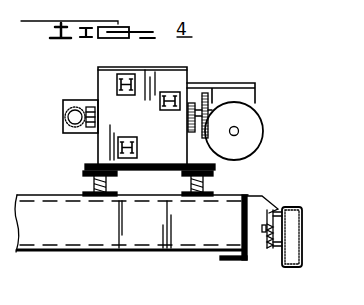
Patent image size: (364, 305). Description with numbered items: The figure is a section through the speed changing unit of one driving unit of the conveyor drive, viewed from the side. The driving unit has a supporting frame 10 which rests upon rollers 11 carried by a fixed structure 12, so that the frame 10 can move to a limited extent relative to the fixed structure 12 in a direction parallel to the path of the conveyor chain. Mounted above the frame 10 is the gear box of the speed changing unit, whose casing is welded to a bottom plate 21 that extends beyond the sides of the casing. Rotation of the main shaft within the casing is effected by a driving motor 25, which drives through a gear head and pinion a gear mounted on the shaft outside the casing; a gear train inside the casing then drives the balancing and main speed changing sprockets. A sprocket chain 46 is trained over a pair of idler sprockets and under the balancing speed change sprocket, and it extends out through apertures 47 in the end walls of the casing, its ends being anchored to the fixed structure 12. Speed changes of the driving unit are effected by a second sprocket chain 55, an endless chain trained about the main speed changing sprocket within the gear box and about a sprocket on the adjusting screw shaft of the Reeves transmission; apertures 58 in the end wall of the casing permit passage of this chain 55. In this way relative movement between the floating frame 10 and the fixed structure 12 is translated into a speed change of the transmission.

The supporting frame 10 is at (235, 260).
The rollers 11 is at (270, 249).
The fixed structure 12 is at (297, 252).
The bottom plate 21 is at (88, 167).
The driving motor 25 is at (246, 147).
The sprocket chain 46 is at (166, 110).
The apertures 47 is at (187, 72).
The second sprocket chain 55 is at (118, 148).
The apertures 58 is at (125, 74).